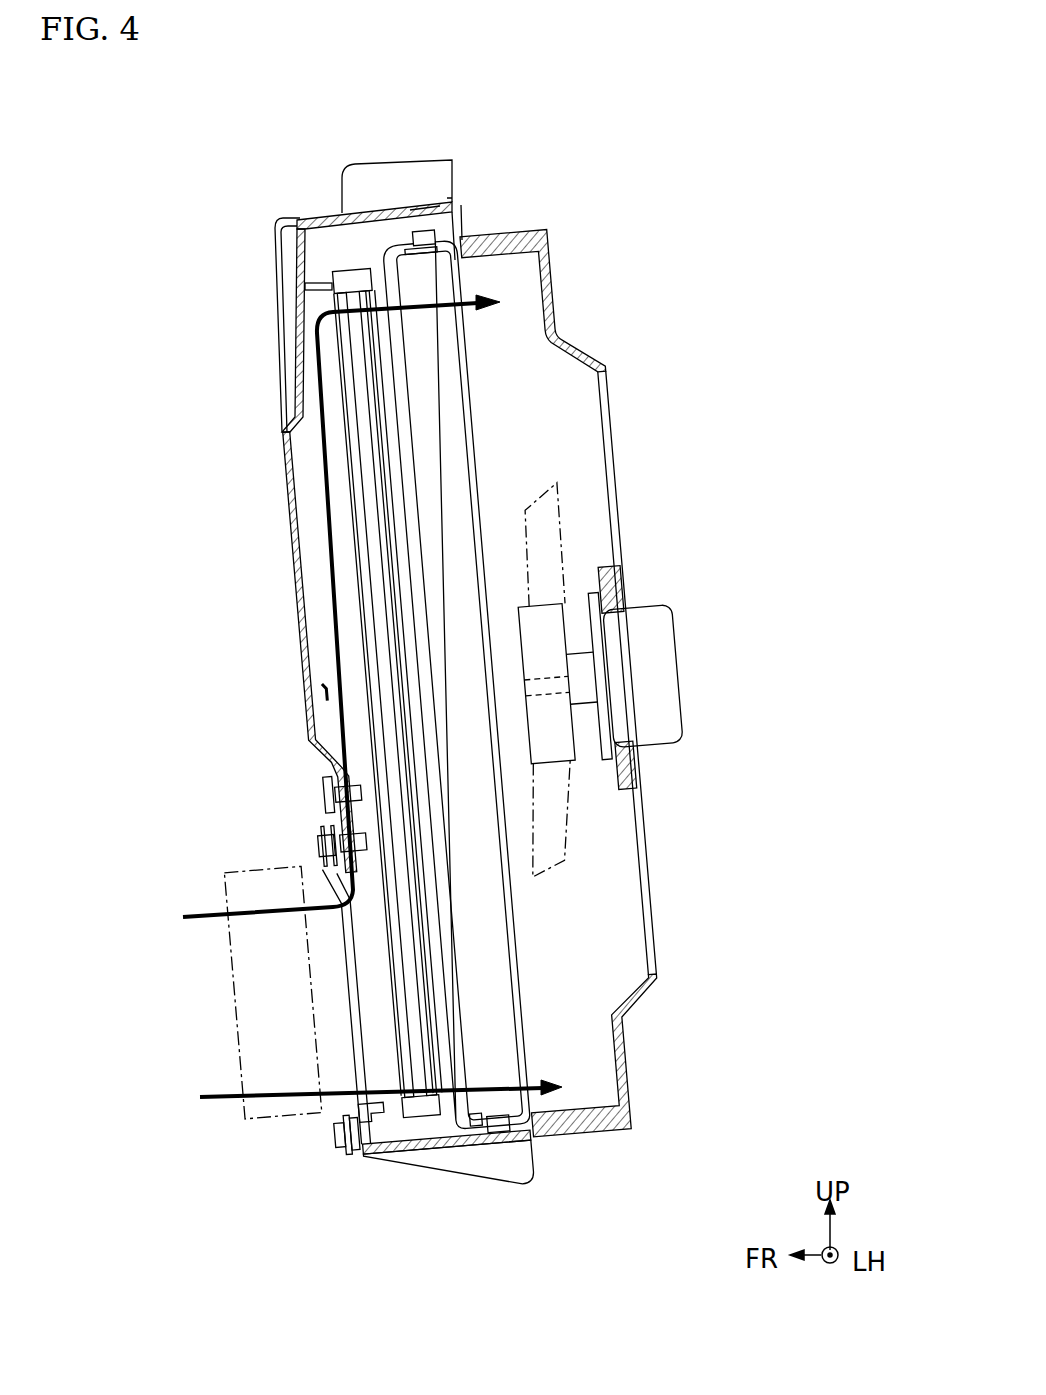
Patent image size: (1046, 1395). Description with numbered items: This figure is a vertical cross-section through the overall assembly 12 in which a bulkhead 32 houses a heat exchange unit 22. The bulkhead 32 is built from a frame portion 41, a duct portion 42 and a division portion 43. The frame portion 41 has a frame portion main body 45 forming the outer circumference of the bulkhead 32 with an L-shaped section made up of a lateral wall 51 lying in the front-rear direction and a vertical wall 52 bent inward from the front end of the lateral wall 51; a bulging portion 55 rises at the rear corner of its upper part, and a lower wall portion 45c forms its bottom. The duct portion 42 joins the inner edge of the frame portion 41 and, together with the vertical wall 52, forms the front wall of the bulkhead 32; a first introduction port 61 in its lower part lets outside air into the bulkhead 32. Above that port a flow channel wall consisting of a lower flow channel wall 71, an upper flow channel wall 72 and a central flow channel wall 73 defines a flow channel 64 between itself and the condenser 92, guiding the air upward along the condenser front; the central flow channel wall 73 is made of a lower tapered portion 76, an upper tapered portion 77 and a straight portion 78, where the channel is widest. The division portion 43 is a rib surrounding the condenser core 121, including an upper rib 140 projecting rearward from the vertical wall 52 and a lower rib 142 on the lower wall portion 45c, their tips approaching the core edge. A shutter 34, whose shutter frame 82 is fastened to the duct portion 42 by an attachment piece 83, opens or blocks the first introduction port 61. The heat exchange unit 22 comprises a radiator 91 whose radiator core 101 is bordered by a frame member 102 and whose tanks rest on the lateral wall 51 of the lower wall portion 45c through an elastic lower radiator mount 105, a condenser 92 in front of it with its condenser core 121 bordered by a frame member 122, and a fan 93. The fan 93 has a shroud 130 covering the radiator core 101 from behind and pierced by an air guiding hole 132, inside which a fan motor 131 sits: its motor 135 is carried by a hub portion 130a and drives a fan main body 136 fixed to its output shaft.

The vehicle air conditioning device 12 is at (165, 184).
The frame portion 41 is at (367, 150).
The frame portion main body 45 is at (388, 213).
The lateral wall 51 is at (395, 212).
The bulging portion 55 is at (440, 168).
The frame member 122 is at (352, 275).
The division portion 43 is at (317, 268).
The frame member 102 is at (437, 246).
The vertical wall 52 is at (298, 243).
The shroud 130 is at (555, 268).
The bulkhead 32 is at (251, 295).
The upper rib 140 is at (323, 290).
The upper flow channel wall 72 is at (304, 338).
The air guiding hole 132 is at (612, 396).
The upper tapered portion 77 is at (284, 430).
The straight portion 78 is at (292, 508).
The duct portion 42 is at (278, 538).
The hub portion 130a is at (617, 585).
The fan motor 131 is at (654, 598).
The central flow channel wall 73 is at (304, 636).
The motor 135 is at (632, 670).
The flow channel 64 is at (326, 698).
The lower tapered portion 76 is at (322, 752).
The fan main body 136 is at (565, 740).
The lower flow channel wall 71 is at (323, 795).
The attachment piece 83 is at (312, 838).
The shutter 34 is at (213, 937).
The shutter frame 82 is at (233, 975).
The fan 93 is at (671, 1018).
The condenser core 121 is at (410, 972).
The first introduction port 61 is at (378, 1105).
The heat exchange unit 22 is at (642, 1115).
The lower rib 142 is at (330, 1137).
The radiator 91 is at (529, 1132).
The lower radiator mount 105 is at (510, 1140).
The condenser 92 is at (416, 1142).
The radiator core 101 is at (485, 1112).
The lower wall portion 45c is at (430, 1172).